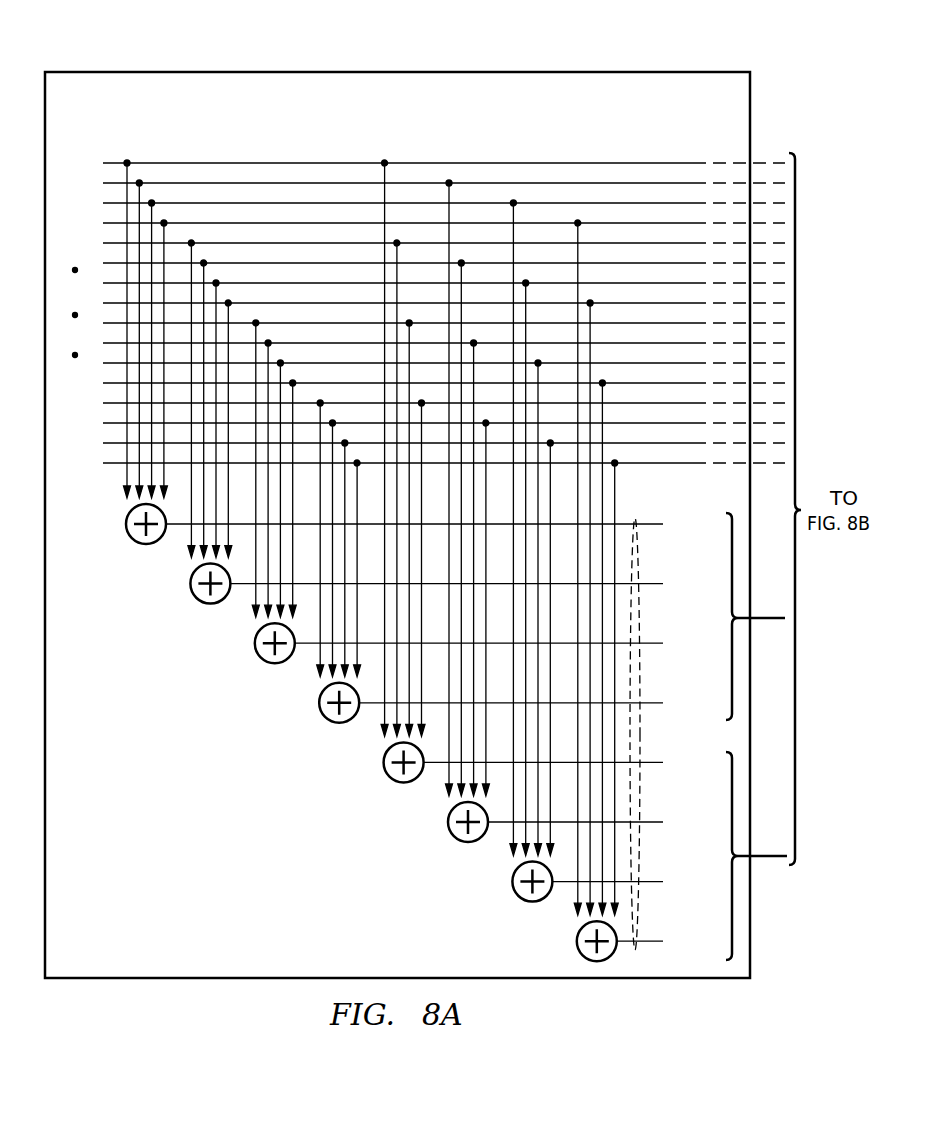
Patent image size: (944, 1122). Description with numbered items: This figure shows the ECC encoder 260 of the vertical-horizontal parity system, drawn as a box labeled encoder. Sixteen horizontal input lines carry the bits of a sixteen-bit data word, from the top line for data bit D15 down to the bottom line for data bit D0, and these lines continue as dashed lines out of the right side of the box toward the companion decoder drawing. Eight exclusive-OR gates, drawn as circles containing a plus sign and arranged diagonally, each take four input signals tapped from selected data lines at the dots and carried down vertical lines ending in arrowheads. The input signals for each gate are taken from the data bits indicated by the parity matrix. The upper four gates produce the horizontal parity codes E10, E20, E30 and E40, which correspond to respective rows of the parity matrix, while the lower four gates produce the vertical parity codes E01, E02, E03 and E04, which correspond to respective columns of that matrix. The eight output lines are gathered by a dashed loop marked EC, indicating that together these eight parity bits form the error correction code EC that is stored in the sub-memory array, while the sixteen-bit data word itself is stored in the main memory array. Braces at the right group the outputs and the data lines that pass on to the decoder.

The ECC encoder 260 is at (262, 72).
The data bit fifteen of the sixteen-bit data word D15 is at (423, 170).
The data bit zero of the sixteen-bit data word D0 is at (426, 471).
The error correction code E10 is at (436, 530).
The error correction code E20 is at (468, 590).
The error correction code E30 is at (500, 649).
The error correction code E40 is at (532, 709).
The error correction code E01 is at (565, 768).
The error correction code E02 is at (597, 828).
The error correction code E03 is at (629, 888).
The error correction code E04 is at (661, 947).
The error correction code EC is at (637, 518).